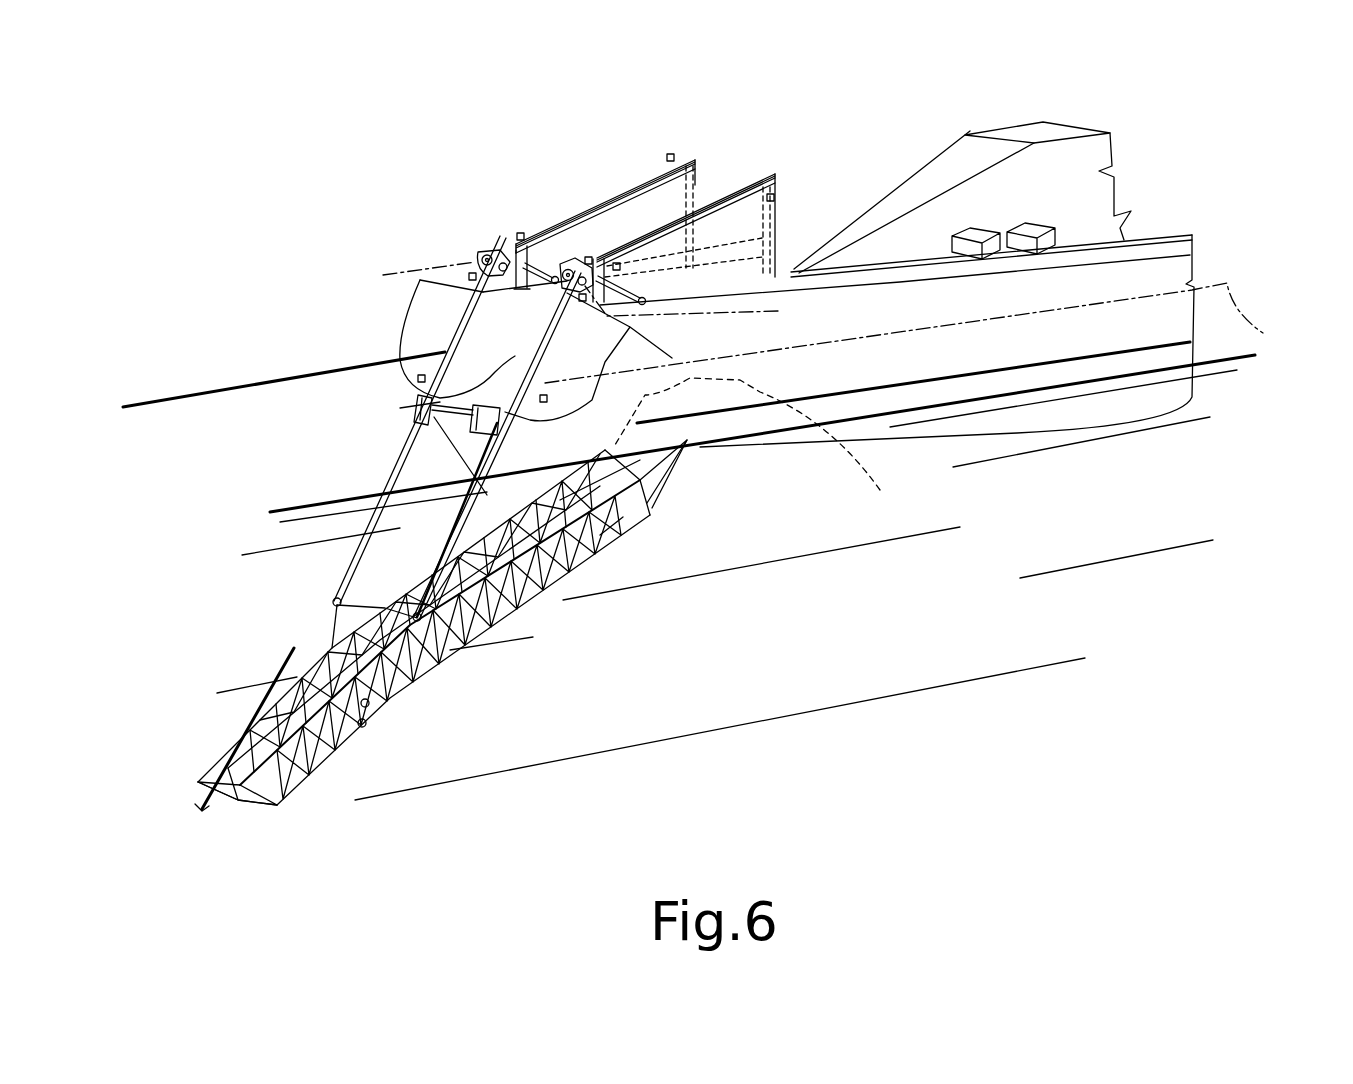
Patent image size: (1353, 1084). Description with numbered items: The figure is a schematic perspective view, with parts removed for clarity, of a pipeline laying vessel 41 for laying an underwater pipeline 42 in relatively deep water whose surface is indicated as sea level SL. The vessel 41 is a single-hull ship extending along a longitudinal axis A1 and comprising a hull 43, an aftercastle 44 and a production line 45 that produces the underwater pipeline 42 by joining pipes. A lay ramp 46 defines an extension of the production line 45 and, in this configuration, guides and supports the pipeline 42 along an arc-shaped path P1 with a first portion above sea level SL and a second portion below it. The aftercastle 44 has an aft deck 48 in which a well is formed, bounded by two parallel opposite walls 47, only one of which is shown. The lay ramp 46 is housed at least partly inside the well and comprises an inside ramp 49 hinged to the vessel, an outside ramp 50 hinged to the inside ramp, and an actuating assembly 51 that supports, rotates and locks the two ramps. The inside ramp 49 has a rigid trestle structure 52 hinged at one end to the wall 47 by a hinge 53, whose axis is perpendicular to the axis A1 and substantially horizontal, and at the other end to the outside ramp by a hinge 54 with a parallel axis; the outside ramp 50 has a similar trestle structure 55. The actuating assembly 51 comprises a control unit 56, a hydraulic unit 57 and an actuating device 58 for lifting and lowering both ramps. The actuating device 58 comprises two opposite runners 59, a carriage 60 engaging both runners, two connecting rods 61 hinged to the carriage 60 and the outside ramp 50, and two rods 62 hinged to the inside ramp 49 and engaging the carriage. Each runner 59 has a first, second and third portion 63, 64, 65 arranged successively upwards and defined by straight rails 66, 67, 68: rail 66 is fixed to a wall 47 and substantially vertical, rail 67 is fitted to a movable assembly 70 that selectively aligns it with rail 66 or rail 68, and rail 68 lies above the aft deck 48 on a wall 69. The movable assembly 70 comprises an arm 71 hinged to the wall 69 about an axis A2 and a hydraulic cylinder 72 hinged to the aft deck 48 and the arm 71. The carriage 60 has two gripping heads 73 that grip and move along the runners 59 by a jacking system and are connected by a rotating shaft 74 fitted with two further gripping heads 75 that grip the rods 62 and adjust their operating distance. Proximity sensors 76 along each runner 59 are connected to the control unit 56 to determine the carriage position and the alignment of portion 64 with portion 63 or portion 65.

The pipeline laying vessel 41 is at (1232, 137).
The underwater pipeline 42 is at (523, 620).
The hull 43 is at (1173, 397).
The aftercastle 44 is at (684, 116).
The production line 45 is at (1086, 188).
The lay ramp 46 is at (614, 732).
The wall 47 is at (398, 345).
The aft deck 48 is at (740, 283).
The inside ramp 49 is at (718, 468).
The outside ramp 50 is at (435, 698).
The actuating assembly 51 is at (208, 137).
The trestle structure 52 is at (667, 560).
The hinge 53 is at (760, 448).
The hinge 54 is at (630, 560).
The trestle structure 55 is at (398, 700).
The control unit 56 is at (1035, 227).
The hydraulic unit 57 is at (977, 232).
The actuating device 58 is at (266, 203).
The runner 59 is at (233, 245).
The carriage 60 is at (393, 408).
The connecting rod 61 is at (334, 600).
The rod 62 is at (450, 520).
The first portion 63 is at (436, 322).
The second portion 64 is at (750, 170).
The third portion 65 is at (588, 190).
The rail 66 is at (413, 350).
The rail 67 is at (507, 242).
The rail 68 is at (638, 187).
The wall 69 is at (625, 180).
The movable assembly 70 is at (468, 250).
The arm 71 is at (475, 256).
The hydraulic cylinder 72 is at (527, 238).
The gripping head 73 is at (415, 425).
The shaft 74 is at (480, 360).
The further gripping head 75 is at (430, 432).
The proximity sensor 76 is at (418, 379).
The longitudinal axis A1 is at (924, 333).
The axis A2 is at (581, 293).
The sea level SL is at (128, 400).
The arc-shaped path P1 is at (210, 735).